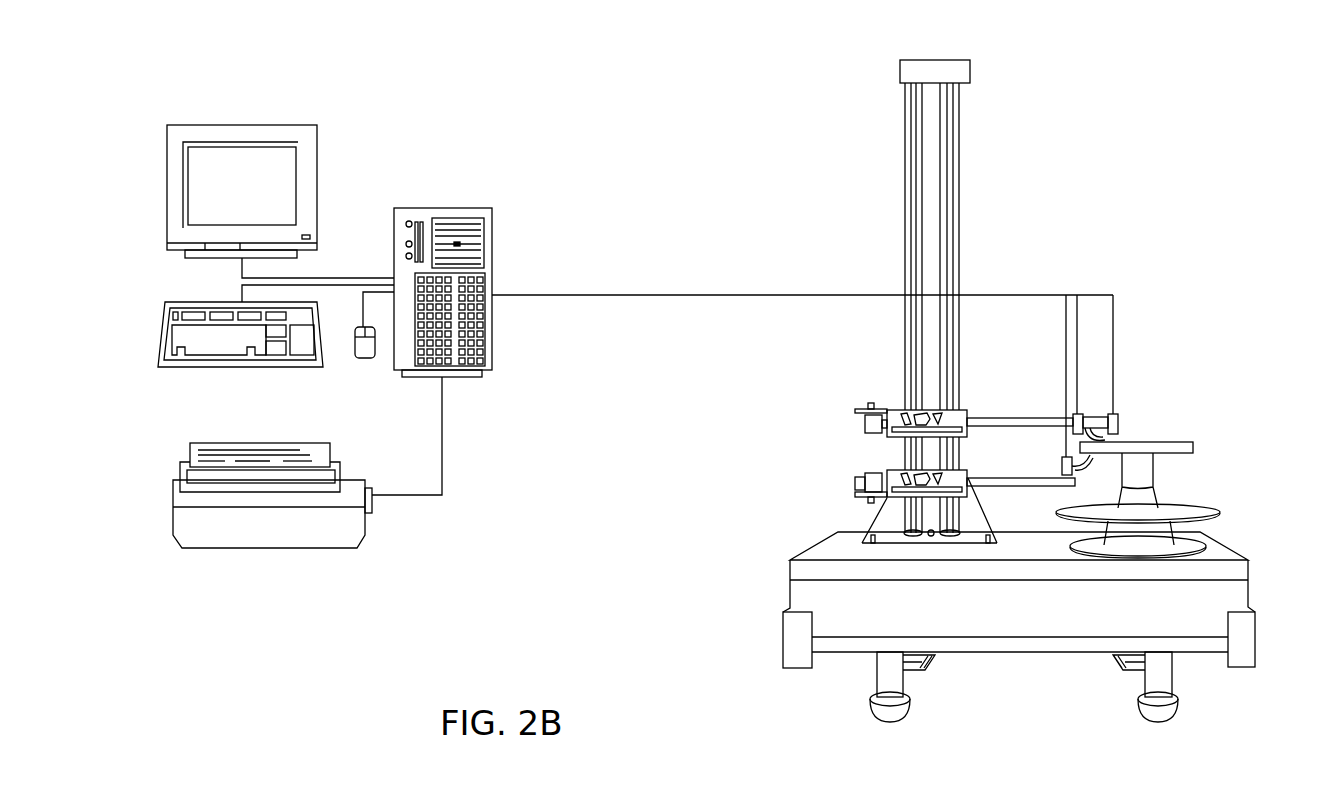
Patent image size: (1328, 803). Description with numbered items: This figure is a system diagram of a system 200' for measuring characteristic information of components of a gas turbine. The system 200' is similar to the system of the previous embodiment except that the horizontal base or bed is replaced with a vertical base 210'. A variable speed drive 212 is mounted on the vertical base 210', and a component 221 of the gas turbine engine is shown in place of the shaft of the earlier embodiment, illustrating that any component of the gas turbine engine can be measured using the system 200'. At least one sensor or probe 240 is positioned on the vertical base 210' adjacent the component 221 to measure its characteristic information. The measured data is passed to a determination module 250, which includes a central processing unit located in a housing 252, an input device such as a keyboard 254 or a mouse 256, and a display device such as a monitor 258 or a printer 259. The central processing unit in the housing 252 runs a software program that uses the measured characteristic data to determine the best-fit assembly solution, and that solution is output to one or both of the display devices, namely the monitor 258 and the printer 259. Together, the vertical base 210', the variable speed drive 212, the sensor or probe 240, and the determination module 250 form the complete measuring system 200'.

The system 200' is at (1011, 280).
The vertical base 210' is at (1019, 627).
The variable speed drive 212 is at (1222, 538).
The component 221 is at (1183, 441).
The sensor or probe 240 is at (1112, 420).
The determination module 250 is at (420, 148).
The housing 252 is at (455, 208).
The keyboard 254 is at (236, 371).
The mouse 256 is at (362, 358).
The monitor 258 is at (246, 125).
The printer 259 is at (277, 537).